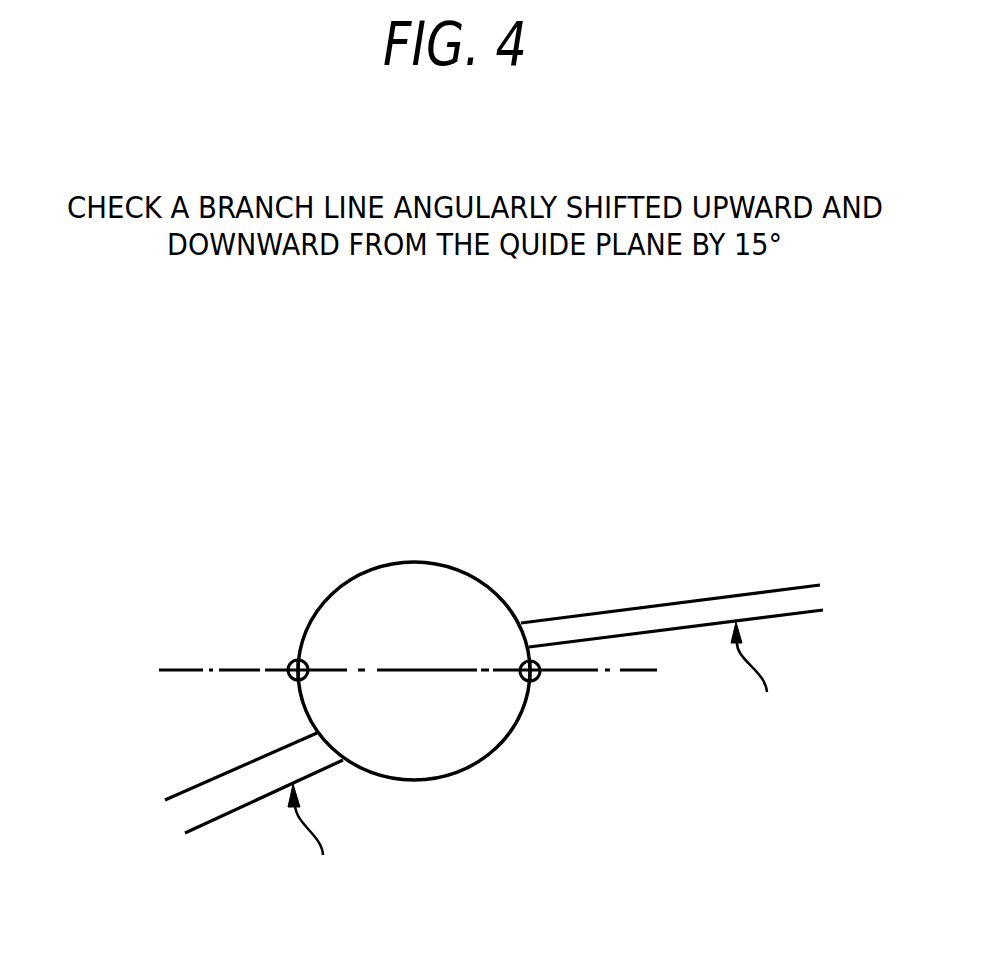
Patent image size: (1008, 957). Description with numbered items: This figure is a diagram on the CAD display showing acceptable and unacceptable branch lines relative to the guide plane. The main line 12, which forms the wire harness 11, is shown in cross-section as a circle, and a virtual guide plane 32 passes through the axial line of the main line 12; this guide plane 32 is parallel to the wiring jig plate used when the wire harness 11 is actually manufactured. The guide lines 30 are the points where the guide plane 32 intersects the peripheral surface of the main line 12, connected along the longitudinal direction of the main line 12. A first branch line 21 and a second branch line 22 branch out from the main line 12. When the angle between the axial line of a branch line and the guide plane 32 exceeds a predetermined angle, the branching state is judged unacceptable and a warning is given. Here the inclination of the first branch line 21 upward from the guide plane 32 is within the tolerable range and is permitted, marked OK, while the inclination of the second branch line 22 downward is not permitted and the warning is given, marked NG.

The wire harness 11 is at (414, 612).
The main line 12 is at (410, 562).
The first branch line 21 is at (757, 591).
The second branch line 22 is at (237, 811).
The guide line 30 is at (290, 661).
The guide plane 32 is at (181, 668).